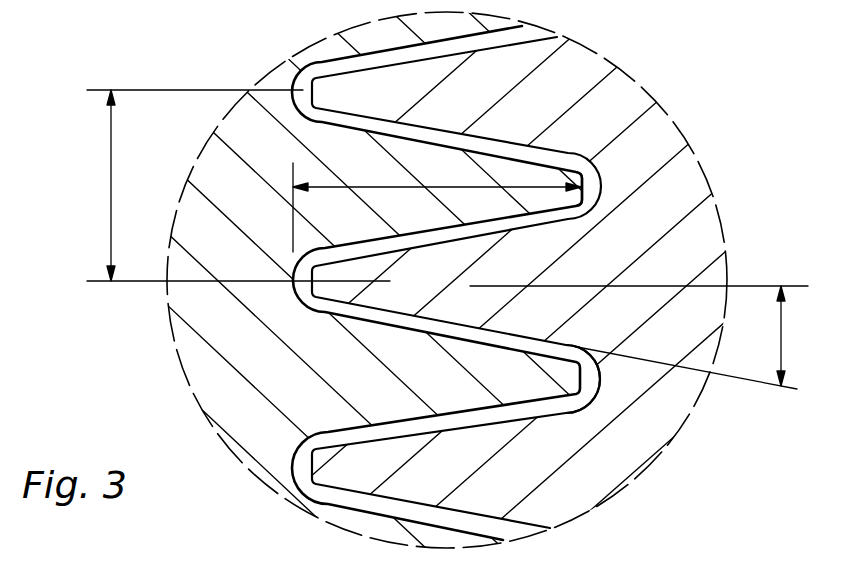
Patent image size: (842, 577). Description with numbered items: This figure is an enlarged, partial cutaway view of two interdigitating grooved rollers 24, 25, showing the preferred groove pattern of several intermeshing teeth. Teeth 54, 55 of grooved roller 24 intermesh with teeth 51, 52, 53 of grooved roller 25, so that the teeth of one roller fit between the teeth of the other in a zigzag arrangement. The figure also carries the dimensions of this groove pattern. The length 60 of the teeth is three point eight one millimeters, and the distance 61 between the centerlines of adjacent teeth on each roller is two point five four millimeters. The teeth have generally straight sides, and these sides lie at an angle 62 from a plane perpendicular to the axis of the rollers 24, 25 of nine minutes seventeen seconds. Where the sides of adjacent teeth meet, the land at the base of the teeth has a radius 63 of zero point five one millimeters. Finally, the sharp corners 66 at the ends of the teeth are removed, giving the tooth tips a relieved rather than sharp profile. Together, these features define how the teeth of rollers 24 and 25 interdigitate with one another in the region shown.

The grooved roller 24 is at (201, 382).
The grooved roller 25 is at (683, 180).
The tooth 51 is at (474, 479).
The tooth 52 is at (449, 292).
The tooth 53 is at (499, 101).
The tooth 54 is at (348, 443).
The tooth 55 is at (354, 128).
The length of the teeth 60 is at (437, 207).
The distance between centerlines of adjacent teeth 61 is at (233, 185).
The angle of tooth sides 62 is at (644, 337).
The radius of land at base of teeth 63 is at (586, 180).
The sharp corners 66 is at (599, 393).